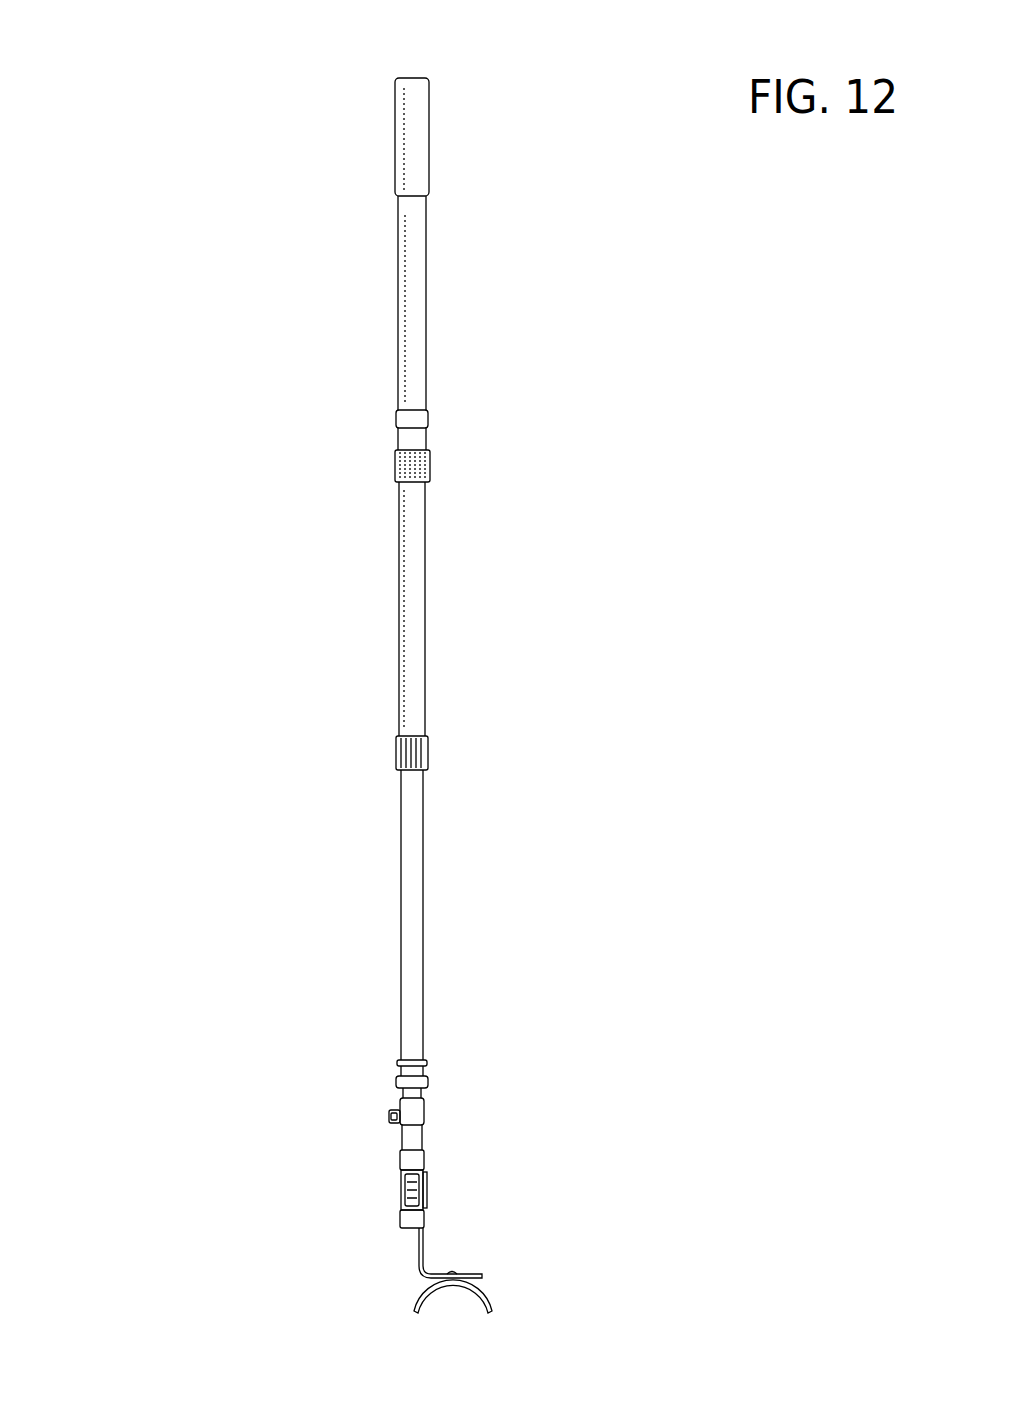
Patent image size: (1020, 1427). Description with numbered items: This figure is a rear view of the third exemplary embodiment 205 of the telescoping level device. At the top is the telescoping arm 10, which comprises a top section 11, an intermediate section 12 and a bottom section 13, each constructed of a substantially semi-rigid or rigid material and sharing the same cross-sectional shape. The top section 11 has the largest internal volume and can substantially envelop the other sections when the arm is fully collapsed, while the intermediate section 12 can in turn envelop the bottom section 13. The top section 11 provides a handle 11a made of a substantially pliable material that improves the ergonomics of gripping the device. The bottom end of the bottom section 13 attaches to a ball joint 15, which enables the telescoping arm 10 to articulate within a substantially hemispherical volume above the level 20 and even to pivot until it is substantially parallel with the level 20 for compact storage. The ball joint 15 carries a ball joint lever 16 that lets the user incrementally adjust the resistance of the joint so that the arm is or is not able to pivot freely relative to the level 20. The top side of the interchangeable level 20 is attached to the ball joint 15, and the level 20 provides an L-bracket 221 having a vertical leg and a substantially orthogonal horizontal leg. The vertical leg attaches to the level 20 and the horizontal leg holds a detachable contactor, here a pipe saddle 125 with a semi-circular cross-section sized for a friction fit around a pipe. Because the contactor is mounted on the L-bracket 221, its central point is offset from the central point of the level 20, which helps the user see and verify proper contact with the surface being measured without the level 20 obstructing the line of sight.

The third exemplary embodiment 205 is at (194, 48).
The telescoping arm 10 is at (445, 80).
The handle 11a is at (413, 133).
The top section 11 is at (411, 291).
The intermediate section 12 is at (412, 534).
The bottom section 13 is at (408, 856).
The ball joint 15 is at (414, 1118).
The ball joint lever 16 is at (390, 1115).
The level 20 is at (406, 1161).
The L-bracket 221 is at (425, 1240).
The pipe saddle 125 is at (493, 1304).